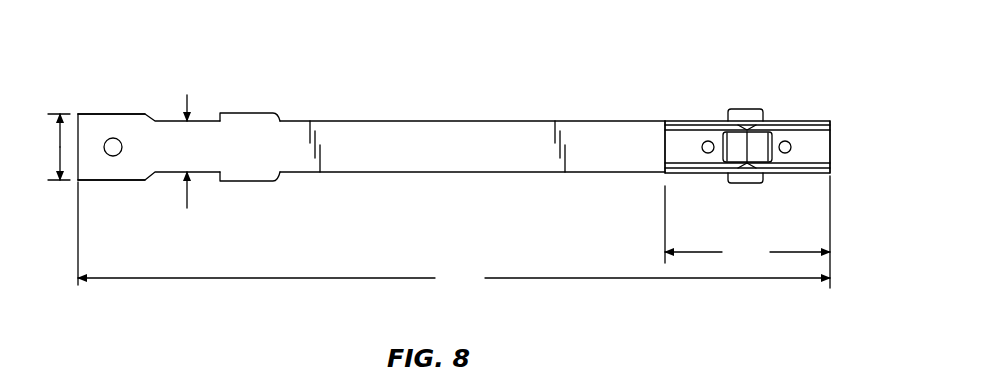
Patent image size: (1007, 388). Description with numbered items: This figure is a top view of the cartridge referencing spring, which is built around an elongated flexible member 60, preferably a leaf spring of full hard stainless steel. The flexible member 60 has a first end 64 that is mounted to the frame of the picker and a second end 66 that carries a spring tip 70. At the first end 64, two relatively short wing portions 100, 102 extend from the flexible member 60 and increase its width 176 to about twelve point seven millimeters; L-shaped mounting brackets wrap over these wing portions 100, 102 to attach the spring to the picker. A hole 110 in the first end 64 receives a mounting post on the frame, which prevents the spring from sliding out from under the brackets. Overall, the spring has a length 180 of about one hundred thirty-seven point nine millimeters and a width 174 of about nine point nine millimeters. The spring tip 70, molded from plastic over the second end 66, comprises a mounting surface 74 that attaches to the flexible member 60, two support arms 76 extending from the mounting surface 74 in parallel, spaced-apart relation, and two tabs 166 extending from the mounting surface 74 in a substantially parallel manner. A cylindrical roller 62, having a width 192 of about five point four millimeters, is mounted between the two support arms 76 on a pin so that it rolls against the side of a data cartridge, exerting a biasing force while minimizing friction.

The flexible member 60 is at (475, 142).
The roller 62 is at (735, 142).
The first end 64 is at (140, 147).
The second end 66 is at (647, 142).
The spring tip 70 is at (778, 50).
The mounting surface 74 is at (813, 145).
The support arms 76 is at (793, 125).
The wing portion 100 is at (93, 112).
The wing portion 102 is at (248, 113).
The hole 110 is at (118, 139).
The tabs 166 is at (747, 108).
The width 174 is at (187, 95).
The width 176 is at (58, 147).
The length 180 is at (454, 234).
The width 192 is at (747, 226).